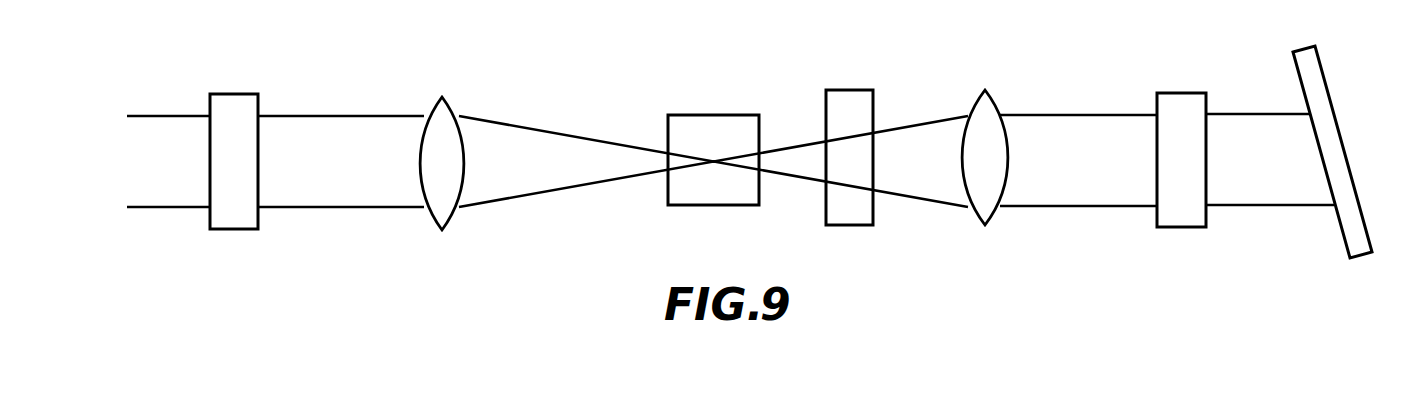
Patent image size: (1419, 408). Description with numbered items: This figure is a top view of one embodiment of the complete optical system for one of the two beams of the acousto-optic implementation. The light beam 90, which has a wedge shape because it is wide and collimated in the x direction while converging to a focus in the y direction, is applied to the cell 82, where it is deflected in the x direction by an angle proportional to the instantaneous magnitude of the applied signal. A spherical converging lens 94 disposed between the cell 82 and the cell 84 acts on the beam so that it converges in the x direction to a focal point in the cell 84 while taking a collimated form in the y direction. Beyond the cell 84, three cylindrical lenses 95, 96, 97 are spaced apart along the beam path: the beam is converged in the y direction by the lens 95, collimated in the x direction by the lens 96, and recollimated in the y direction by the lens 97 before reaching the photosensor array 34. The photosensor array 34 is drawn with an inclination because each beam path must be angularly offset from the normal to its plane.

The light beam 90 is at (177, 174).
The cell 82 is at (231, 93).
The spherical converging lens 94 is at (445, 95).
The cell 84 is at (706, 115).
The cylindrical lens 95 is at (845, 90).
The cylindrical lens 96 is at (987, 90).
The cylindrical lens 97 is at (1178, 92).
The photosensor array 34 is at (1326, 73).